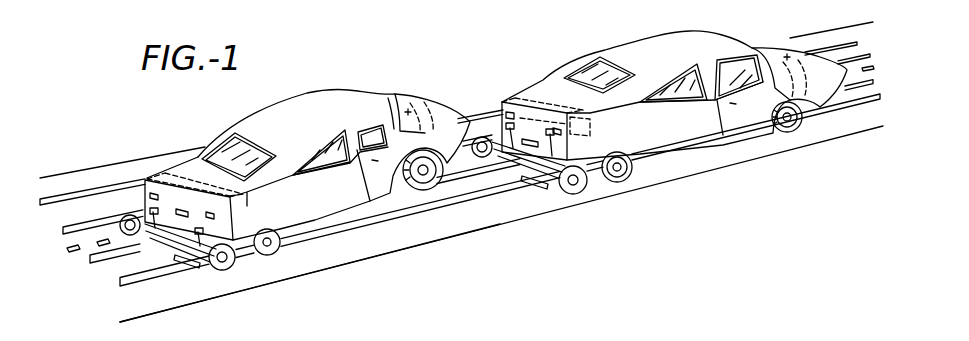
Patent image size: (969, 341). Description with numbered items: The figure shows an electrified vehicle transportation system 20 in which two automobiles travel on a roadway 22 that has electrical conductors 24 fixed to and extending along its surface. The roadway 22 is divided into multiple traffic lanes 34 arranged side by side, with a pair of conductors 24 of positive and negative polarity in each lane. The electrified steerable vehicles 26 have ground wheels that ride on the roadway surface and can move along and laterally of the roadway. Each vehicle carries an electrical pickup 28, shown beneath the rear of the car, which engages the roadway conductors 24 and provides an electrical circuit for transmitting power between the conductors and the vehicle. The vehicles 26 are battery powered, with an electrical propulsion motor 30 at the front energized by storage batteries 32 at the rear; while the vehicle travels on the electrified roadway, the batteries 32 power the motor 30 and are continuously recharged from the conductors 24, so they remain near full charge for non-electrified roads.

The electrified vehicle transportation system 20 is at (450, 51).
The roadway 22 is at (117, 303).
The electrical conductors 24 is at (88, 224).
The electrified steerable vehicles 26 is at (283, 98).
The electrical pickups 28 is at (160, 255).
The electrical propulsion motors 30 is at (410, 107).
The storage batteries 32 is at (175, 177).
The traffic lanes 34 is at (113, 168).